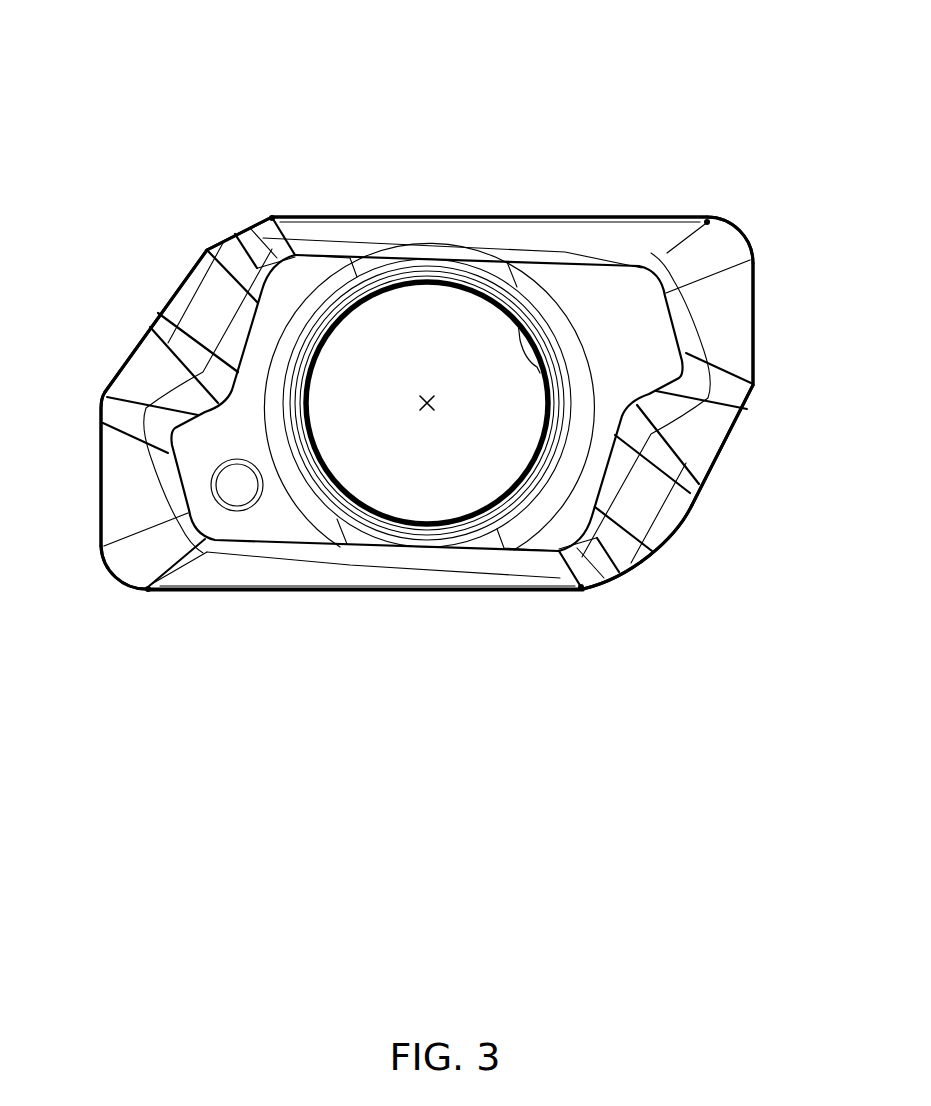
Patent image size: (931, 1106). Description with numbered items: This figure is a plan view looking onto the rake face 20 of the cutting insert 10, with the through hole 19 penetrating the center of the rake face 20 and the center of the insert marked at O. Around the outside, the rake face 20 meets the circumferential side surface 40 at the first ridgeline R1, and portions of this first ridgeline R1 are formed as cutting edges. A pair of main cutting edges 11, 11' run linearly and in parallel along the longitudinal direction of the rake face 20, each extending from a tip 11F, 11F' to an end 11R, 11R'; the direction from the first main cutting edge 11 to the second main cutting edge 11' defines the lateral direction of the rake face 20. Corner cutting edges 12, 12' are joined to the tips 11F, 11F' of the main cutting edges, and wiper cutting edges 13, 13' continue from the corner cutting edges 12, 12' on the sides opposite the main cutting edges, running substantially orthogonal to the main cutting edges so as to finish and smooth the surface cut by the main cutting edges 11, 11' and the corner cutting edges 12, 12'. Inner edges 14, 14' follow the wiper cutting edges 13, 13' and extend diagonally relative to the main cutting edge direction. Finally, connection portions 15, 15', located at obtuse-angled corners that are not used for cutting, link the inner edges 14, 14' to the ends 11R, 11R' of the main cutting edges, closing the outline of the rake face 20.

The cutting insert 10 is at (413, 899).
The first main cutting edge 11 is at (365, 630).
The second main cutting edge 11' is at (485, 167).
The tip of first main cutting edge 11F is at (125, 658).
The end of first main cutting edge 11R is at (594, 656).
The end of second main cutting edge 11R' is at (266, 121).
The tip of second main cutting edge 11F' is at (743, 145).
The first corner cutting edge 12 is at (125, 596).
The second corner cutting edge 12' is at (758, 200).
The first wiper cutting edge 13 is at (141, 401).
The second wiper cutting edge 13' is at (736, 405).
The first inner edge 14 is at (142, 323).
The second inner edge 14' is at (719, 474).
The first connection portion 15 is at (215, 220).
The second connection portion 15' is at (659, 578).
The through hole 19 is at (518, 323).
The rake face 20 is at (592, 300).
The circumferential side surface 40 is at (356, 205).
The first ridgeline R1 is at (246, 597).
The center axis O is at (430, 398).